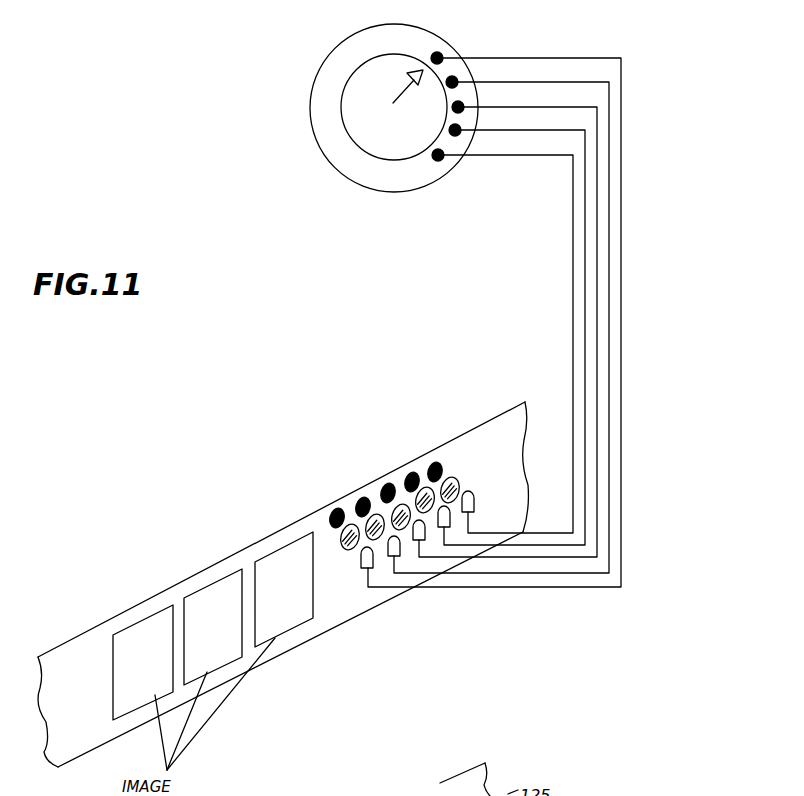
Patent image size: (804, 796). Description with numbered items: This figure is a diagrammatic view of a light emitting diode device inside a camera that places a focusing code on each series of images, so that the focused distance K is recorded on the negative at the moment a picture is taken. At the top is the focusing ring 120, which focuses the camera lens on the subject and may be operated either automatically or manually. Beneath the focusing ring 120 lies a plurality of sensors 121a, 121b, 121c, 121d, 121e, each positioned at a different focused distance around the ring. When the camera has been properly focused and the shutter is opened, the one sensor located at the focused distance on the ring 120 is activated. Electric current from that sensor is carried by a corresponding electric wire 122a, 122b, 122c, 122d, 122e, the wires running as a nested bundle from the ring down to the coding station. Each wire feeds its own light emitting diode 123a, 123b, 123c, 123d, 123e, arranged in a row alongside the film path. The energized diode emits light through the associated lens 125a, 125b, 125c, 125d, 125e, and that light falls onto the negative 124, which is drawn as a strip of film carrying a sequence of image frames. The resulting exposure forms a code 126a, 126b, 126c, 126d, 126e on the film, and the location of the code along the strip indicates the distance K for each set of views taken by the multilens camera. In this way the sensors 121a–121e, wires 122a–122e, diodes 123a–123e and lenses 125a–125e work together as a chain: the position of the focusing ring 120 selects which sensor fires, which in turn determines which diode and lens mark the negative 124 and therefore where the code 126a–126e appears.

The focusing ring 120 is at (350, 120).
The sensor 121a is at (437, 58).
The sensor 121b is at (452, 82).
The sensor 121c is at (458, 107).
The sensor 121d is at (455, 130).
The sensor 121e is at (438, 155).
The electric wire 122a is at (621, 213).
The electric wire 122b is at (609, 248).
The electric wire 122c is at (597, 277).
The electric wire 122d is at (585, 307).
The electric wire 122e is at (573, 340).
The light emitting diode 123a is at (362, 571).
The light emitting diode 123b is at (390, 560).
The light emitting diode 123c is at (417, 545).
The light emitting diode 123d is at (452, 510).
The light emitting diode 123e is at (474, 495).
The negative 124 is at (127, 618).
The lens 125a is at (347, 524).
The lens 125b is at (376, 514).
The lens 125c is at (404, 505).
The lens 125d is at (428, 489).
The lens 125e is at (456, 480).
The code 126a is at (333, 509).
The code 126b is at (360, 497).
The code 126c is at (390, 484).
The code 126d is at (416, 472).
The code 126e is at (440, 463).